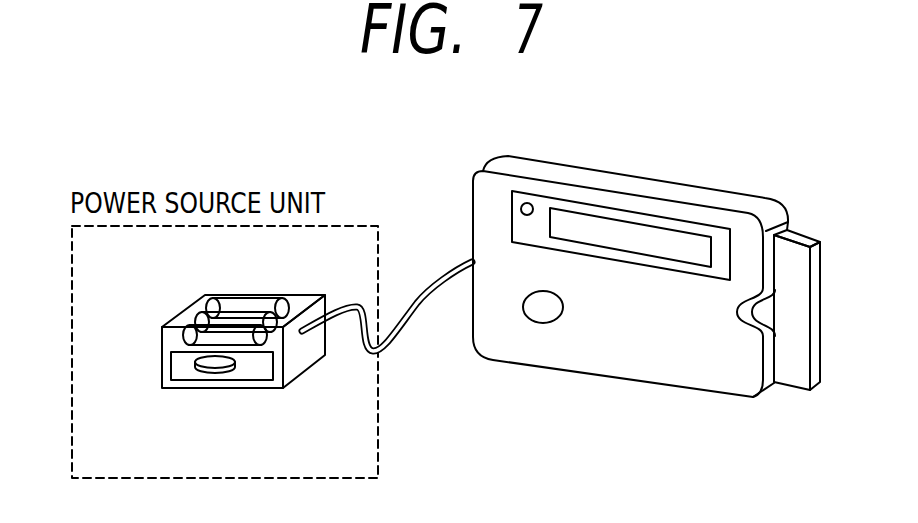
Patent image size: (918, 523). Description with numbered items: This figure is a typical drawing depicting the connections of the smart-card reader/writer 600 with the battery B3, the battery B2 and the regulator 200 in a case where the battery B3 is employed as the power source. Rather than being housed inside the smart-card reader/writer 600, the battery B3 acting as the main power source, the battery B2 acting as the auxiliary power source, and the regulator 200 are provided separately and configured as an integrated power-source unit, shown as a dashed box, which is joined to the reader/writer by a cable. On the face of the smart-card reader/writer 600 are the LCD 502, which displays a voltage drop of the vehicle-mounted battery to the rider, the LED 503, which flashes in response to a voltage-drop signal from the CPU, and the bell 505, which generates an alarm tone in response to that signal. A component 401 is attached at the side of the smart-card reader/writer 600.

The smart-card reader/writer 600 is at (490, 182).
The LED 503 is at (519, 209).
The LCD 502 is at (660, 238).
The bell 505 is at (552, 305).
The battery pack 401 is at (798, 378).
The regulator 200 is at (260, 375).
The battery B3 is at (233, 307).
The battery B2 is at (175, 362).